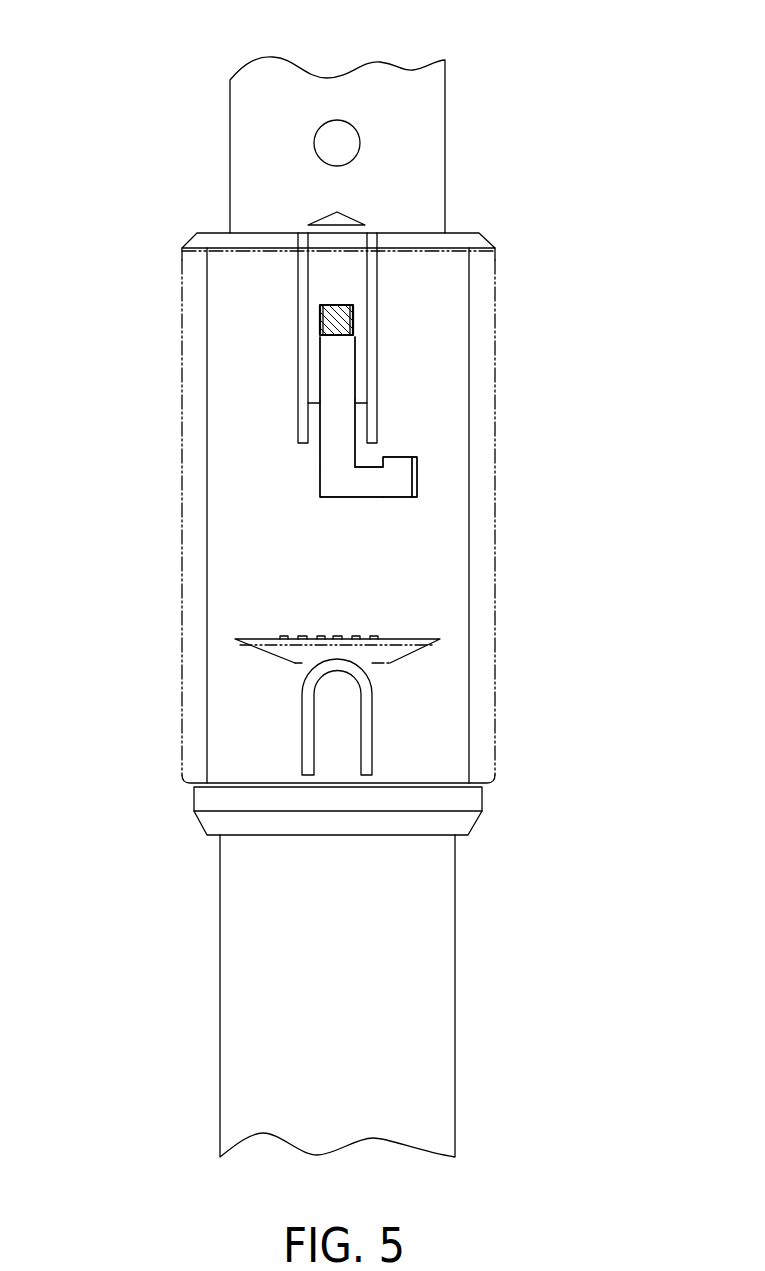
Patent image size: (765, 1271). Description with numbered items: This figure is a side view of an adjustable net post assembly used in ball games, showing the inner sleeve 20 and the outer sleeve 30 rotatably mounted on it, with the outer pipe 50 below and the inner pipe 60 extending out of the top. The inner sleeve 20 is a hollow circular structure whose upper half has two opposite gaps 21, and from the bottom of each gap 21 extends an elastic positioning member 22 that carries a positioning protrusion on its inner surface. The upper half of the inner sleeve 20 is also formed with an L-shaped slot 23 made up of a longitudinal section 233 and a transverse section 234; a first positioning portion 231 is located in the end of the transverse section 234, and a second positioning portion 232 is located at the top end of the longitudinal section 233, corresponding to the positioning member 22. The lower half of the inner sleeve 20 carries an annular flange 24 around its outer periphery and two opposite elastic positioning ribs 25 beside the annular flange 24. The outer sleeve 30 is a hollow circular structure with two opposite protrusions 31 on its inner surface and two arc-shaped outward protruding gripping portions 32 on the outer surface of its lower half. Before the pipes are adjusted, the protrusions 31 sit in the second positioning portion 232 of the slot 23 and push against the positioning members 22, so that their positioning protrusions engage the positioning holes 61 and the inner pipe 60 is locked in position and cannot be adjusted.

The inner sleeve 20 is at (469, 560).
The gap 21 is at (300, 298).
The elastic positioning member 22 is at (342, 268).
The slot 23 is at (92, 517).
The first positioning portion 231 is at (397, 460).
The second positioning portion 232 is at (355, 328).
The longitudinal section 233 is at (337, 418).
The transverse section 234 is at (365, 490).
The annular flange 24 is at (410, 787).
The elastic positioning rib 25 is at (338, 697).
The outer sleeve 30 is at (193, 452).
The protrusion 31 is at (322, 327).
The gripping portion 32 is at (300, 650).
The outer pipe 50 is at (425, 1028).
The inner pipe 60 is at (415, 117).
The positioning hole 61 is at (336, 130).